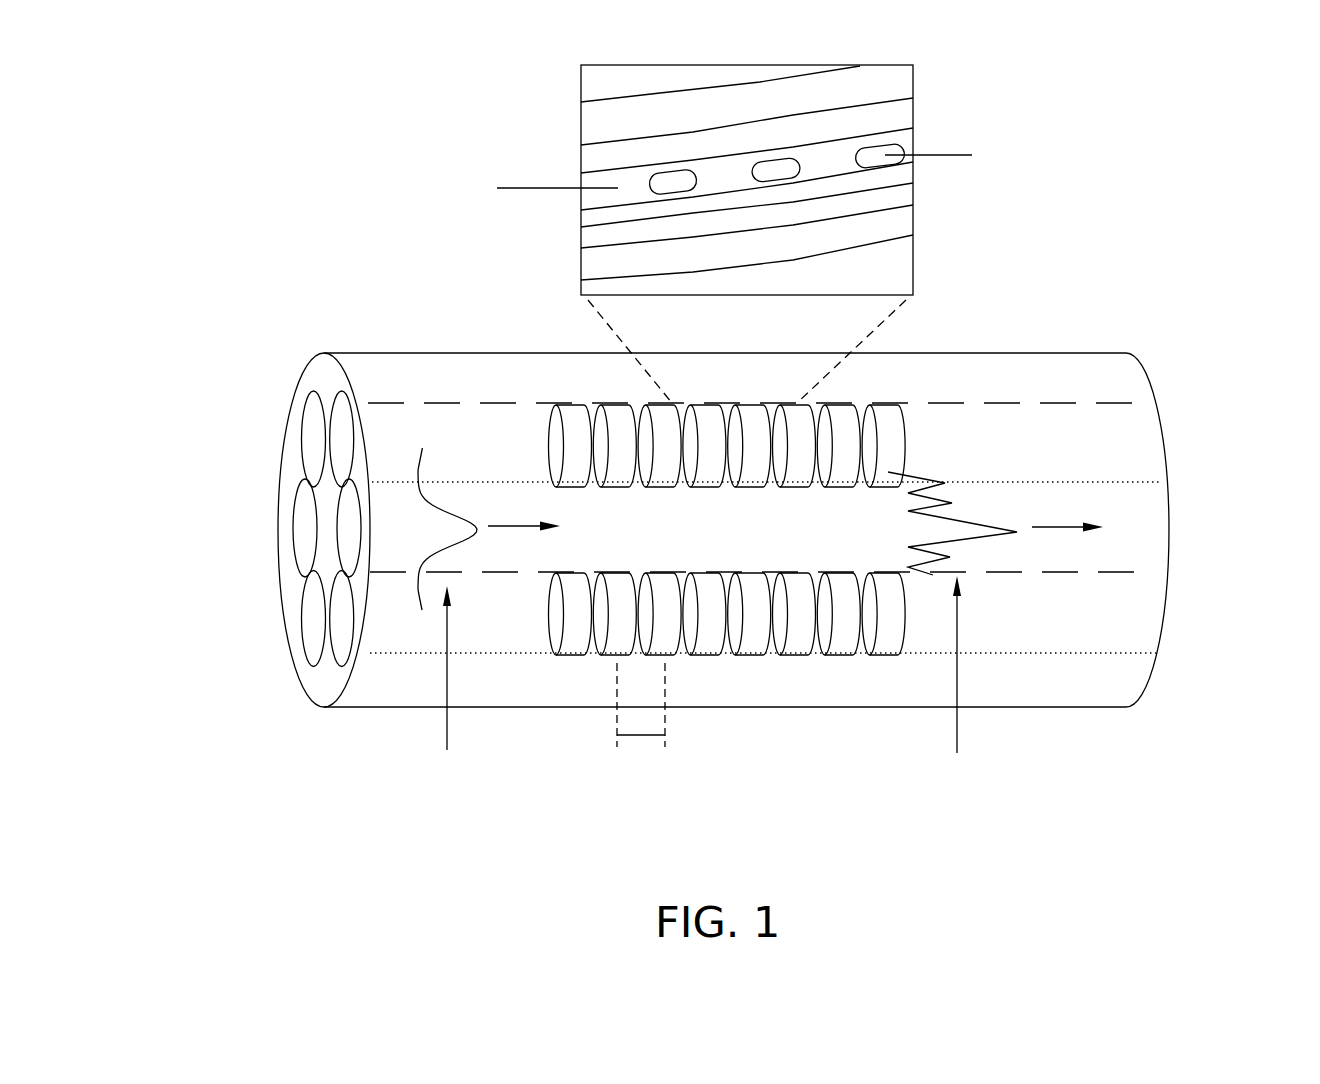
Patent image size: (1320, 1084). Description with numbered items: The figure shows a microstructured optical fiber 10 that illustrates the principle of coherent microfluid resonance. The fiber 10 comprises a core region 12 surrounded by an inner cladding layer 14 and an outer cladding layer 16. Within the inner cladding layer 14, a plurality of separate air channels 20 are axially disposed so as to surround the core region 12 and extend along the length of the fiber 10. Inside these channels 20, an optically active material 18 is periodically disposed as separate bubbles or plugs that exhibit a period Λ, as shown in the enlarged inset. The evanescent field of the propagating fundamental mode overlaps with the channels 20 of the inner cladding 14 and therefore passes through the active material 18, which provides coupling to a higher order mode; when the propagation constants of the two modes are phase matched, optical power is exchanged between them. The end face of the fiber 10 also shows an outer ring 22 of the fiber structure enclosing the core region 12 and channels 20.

The microstructured optical fiber 10 is at (711, 462).
The core region 12 is at (325, 525).
The inner cladding layer 14 is at (1133, 447).
The outer cladding layer 16 is at (1087, 377).
The optically active material 18 is at (570, 642).
The air channels 20 is at (313, 426).
The cladding ring 22 is at (323, 365).